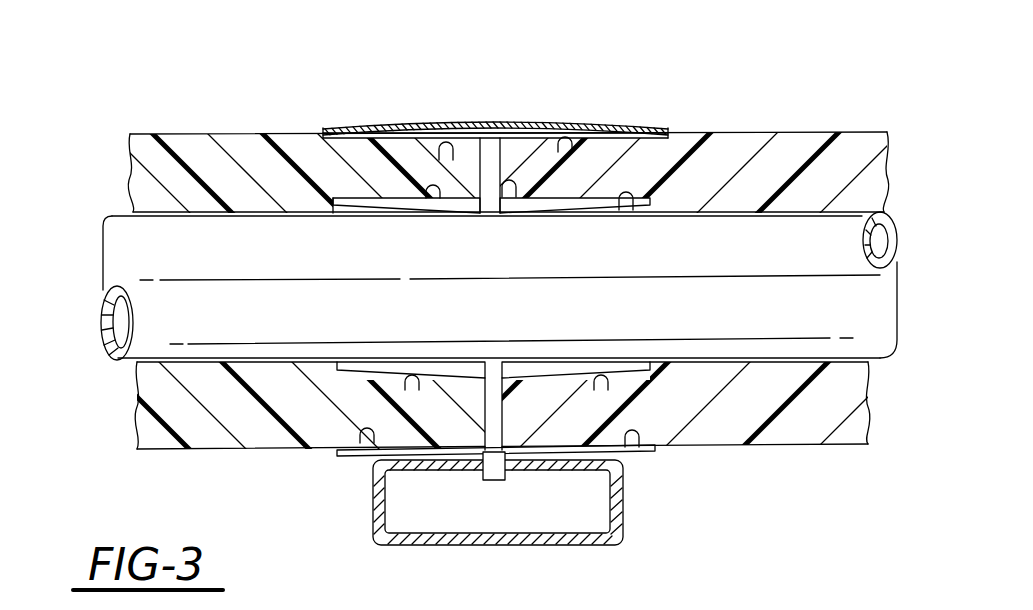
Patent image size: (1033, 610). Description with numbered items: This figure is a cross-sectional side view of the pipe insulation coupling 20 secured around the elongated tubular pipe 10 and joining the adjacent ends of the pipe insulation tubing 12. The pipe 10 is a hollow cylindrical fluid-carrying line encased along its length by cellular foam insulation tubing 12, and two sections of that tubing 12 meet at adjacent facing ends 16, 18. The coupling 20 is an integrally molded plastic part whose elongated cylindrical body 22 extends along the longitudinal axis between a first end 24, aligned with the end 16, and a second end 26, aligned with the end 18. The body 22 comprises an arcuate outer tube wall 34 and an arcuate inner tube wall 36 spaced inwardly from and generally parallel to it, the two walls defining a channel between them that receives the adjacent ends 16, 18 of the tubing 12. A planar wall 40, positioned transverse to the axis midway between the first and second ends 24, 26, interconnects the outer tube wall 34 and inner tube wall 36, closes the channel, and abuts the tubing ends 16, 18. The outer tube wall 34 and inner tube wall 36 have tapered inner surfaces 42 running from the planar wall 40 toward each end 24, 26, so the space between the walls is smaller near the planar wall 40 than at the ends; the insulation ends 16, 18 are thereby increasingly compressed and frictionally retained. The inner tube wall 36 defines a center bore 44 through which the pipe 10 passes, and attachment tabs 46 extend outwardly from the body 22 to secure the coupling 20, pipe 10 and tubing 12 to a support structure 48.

The elongated tubular pipe 10 is at (96, 232).
The pipe insulation tubing 12 is at (177, 134).
The adjacent facing end 16 is at (446, 421).
The adjacent facing end 18 is at (538, 421).
The pipe insulation coupling 20 is at (481, 282).
The elongated cylindrical body 22 is at (527, 126).
The first end 24 is at (322, 126).
The second end 26 is at (674, 126).
The outer tube wall 34 is at (378, 130).
The inner tube wall 36 is at (393, 206).
The planar wall 40 is at (509, 197).
The tapered inner surface 42 is at (446, 142).
The center bore 44 is at (340, 217).
The attachment tab 46 is at (505, 473).
The support structure 48 is at (625, 543).